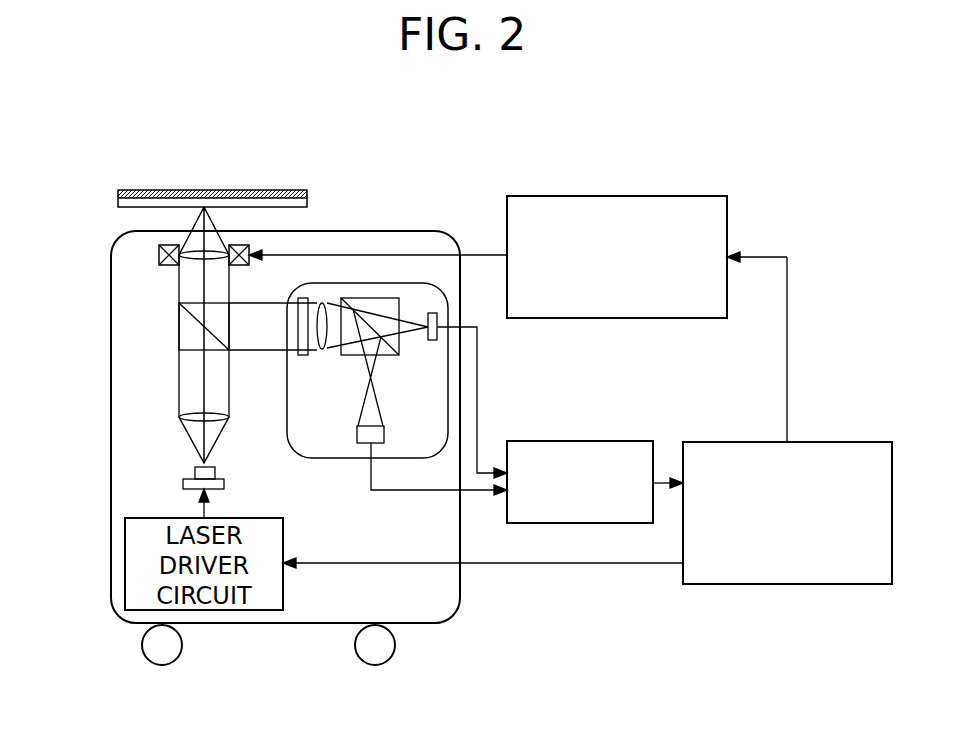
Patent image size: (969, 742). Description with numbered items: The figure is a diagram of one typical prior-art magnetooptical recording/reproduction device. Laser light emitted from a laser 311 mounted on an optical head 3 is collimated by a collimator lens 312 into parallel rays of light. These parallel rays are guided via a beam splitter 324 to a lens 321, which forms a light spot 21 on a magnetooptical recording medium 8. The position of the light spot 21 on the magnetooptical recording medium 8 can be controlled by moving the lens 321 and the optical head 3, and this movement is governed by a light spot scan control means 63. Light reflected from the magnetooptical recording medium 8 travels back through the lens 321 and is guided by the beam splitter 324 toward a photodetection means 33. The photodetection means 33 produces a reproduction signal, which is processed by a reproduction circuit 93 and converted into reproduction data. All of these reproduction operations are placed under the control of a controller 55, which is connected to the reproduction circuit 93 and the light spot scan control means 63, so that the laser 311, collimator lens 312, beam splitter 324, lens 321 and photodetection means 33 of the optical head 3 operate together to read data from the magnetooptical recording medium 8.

The optical head 3 is at (462, 588).
The magnetooptical recording medium 8 is at (117, 192).
The light spot 21 is at (204, 207).
The lens 321 is at (180, 262).
The beam splitter 324 is at (188, 328).
The collimator lens 312 is at (230, 418).
The laser 311 is at (193, 469).
The photodetection means 33 is at (338, 458).
The light spot scan control means 63 is at (615, 196).
The reproduction circuit 93 is at (578, 441).
The controller 55 is at (787, 584).